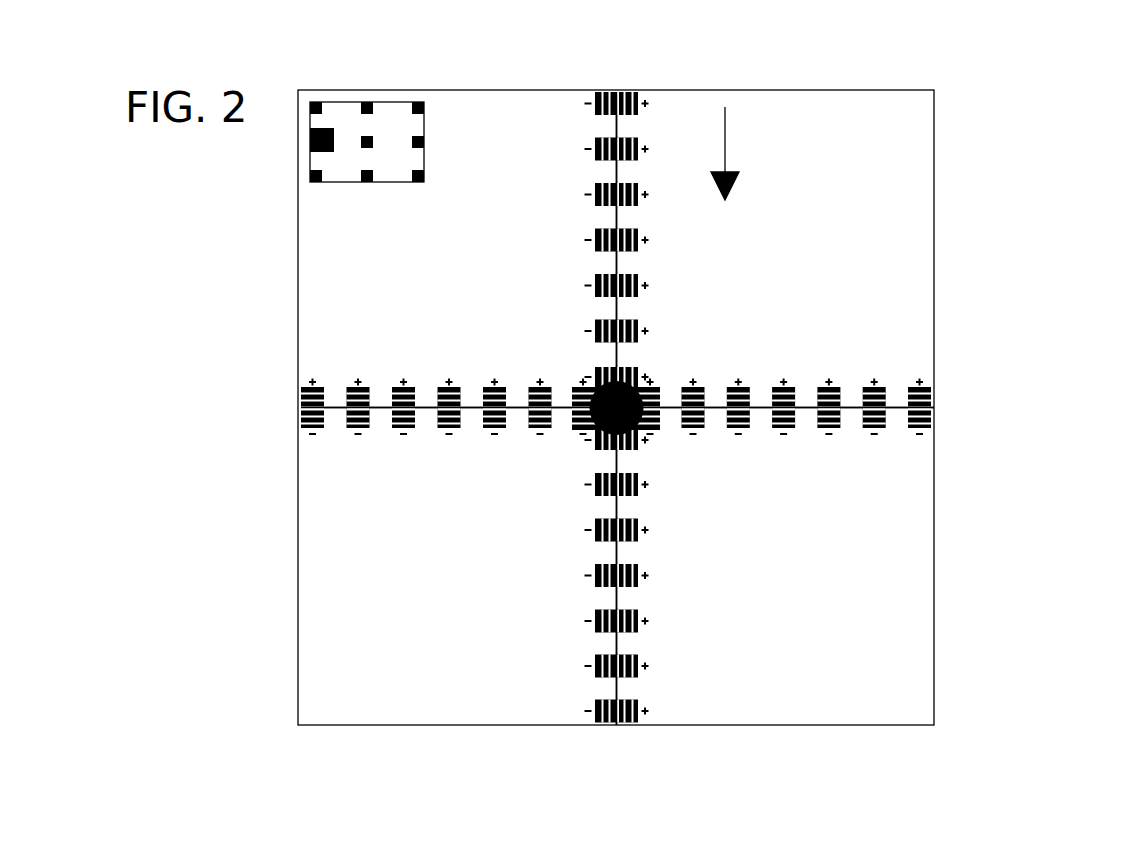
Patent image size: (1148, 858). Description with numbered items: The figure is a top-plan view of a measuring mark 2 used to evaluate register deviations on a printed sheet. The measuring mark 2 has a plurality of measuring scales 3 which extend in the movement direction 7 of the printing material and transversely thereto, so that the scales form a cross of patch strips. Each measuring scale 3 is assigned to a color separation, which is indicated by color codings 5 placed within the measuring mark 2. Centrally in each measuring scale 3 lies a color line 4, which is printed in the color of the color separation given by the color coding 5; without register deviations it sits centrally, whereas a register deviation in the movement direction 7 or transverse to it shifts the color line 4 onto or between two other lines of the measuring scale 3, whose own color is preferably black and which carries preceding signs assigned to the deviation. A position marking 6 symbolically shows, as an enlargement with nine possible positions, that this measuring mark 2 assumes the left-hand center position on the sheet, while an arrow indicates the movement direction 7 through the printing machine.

The measuring mark 2 is at (876, 90).
The measuring scale 3 is at (612, 92).
The color line 4 is at (934, 406).
The color coding 5 is at (614, 374).
The position marking 6 is at (396, 102).
The movement direction 7 is at (727, 140).